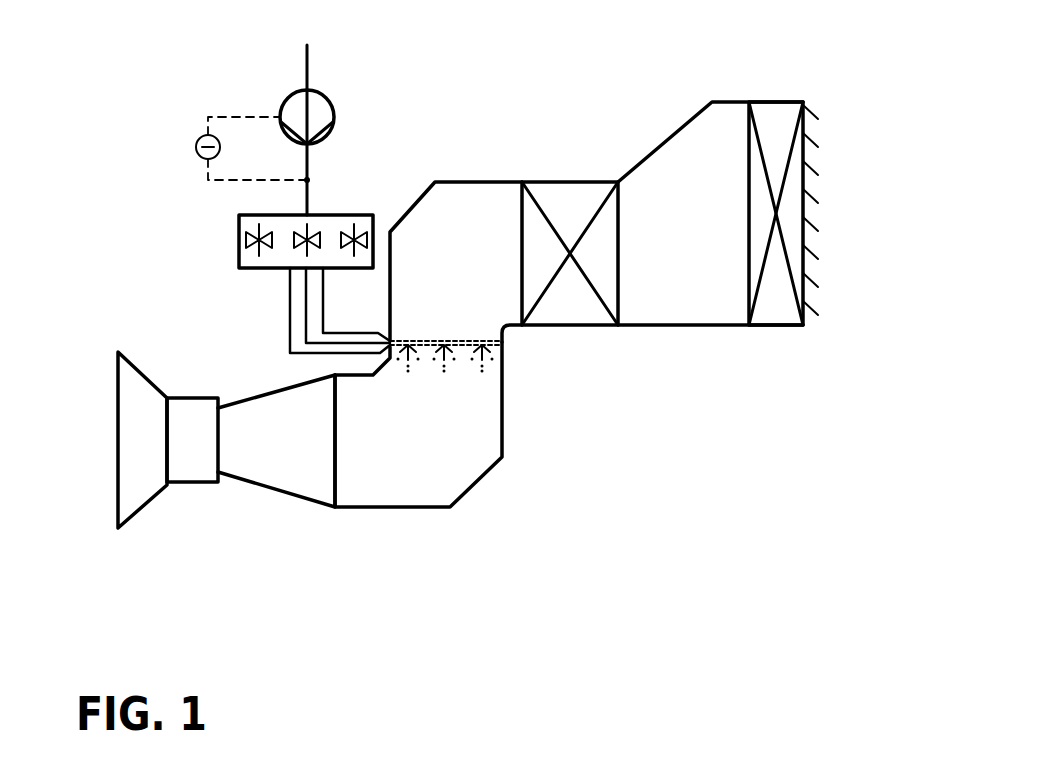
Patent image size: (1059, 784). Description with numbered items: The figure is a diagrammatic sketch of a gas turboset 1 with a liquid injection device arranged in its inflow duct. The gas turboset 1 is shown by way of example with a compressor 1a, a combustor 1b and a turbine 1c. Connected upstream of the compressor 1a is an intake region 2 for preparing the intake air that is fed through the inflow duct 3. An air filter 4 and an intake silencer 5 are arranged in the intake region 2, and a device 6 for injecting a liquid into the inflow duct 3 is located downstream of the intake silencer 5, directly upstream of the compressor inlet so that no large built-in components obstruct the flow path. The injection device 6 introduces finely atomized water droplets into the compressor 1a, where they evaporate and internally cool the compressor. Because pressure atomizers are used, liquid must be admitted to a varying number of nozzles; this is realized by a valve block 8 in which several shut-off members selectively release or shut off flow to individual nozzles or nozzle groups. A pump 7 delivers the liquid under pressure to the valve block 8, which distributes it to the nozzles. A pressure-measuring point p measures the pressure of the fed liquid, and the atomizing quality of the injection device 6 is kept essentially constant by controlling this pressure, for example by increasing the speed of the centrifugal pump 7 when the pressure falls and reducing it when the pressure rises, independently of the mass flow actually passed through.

The gas turboset 1 is at (221, 419).
The compressor 1a is at (272, 417).
The combustor 1b is at (188, 417).
The turbine 1c is at (138, 417).
The intake region 2 is at (576, 304).
The inflow duct 3 is at (462, 282).
The air filter 4 is at (773, 142).
The intake silencer 5 is at (555, 205).
The injection device 6 is at (488, 350).
The pump 7 is at (333, 108).
The valve block 8 is at (345, 215).
The pressure-measuring point p is at (253, 130).